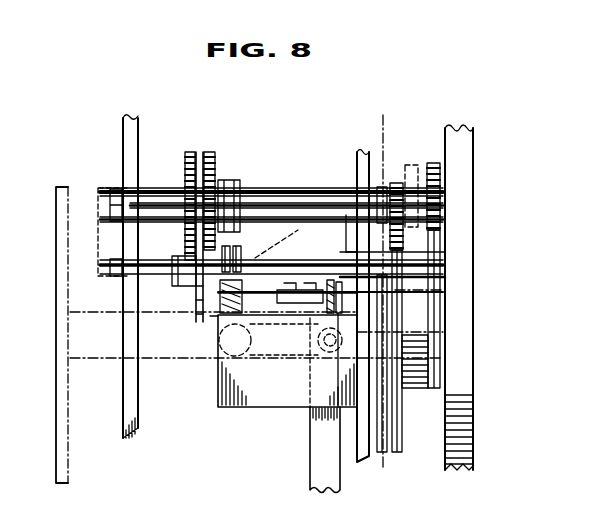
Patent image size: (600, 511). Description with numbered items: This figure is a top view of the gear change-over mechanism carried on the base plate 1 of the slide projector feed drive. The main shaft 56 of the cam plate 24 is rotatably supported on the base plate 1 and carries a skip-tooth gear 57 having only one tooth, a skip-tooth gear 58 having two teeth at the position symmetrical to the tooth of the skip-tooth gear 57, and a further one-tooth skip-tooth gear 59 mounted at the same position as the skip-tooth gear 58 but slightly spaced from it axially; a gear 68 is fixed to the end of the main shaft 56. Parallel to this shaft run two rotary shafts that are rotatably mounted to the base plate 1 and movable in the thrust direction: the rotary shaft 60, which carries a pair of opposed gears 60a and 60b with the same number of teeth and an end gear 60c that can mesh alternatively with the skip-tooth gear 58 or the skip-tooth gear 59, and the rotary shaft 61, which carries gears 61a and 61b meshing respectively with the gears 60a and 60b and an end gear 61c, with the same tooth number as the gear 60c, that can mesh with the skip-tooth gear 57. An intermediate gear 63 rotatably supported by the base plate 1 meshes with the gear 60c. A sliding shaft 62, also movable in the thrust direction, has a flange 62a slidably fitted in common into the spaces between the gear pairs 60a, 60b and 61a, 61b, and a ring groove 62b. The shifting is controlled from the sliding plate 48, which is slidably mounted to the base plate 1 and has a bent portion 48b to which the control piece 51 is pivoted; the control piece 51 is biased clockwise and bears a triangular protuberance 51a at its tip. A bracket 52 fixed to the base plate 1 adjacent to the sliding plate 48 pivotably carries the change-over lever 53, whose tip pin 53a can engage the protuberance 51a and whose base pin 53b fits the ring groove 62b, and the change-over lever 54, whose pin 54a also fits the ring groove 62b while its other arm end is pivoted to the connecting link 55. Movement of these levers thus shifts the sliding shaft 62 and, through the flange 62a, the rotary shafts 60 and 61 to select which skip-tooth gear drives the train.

The base plate 1 is at (139, 128).
The cam plate 24 is at (473, 156).
The sliding plate 48 is at (312, 312).
The bent portion 48b is at (318, 300).
The control piece 51 is at (267, 372).
The triangular protuberance 51a is at (354, 240).
The bracket 52 is at (248, 402).
The change-over lever 53 is at (280, 292).
The pin 53a is at (318, 300).
The pin 53b is at (220, 318).
The change-over lever 54 is at (265, 383).
The pin 54a is at (302, 212).
The connecting link 55 is at (316, 463).
The main shaft 56 is at (414, 388).
The skip-tooth gear 57 is at (440, 270).
The skip-tooth gear 58 is at (399, 455).
The skip-tooth gear 59 is at (383, 455).
The rotary shaft 60 is at (110, 206).
The gear 60a is at (185, 242).
The gear 60b is at (229, 180).
The gear 60c is at (440, 292).
The rotary shaft 61 is at (163, 192).
The gear 61a is at (190, 152).
The gear 61b is at (212, 150).
The gear 61c is at (437, 163).
The sliding shaft 62 is at (110, 262).
The flange 62a is at (188, 302).
The ring groove 62b is at (238, 262).
The intermediate gear 63 is at (383, 150).
The gear 68 is at (62, 232).